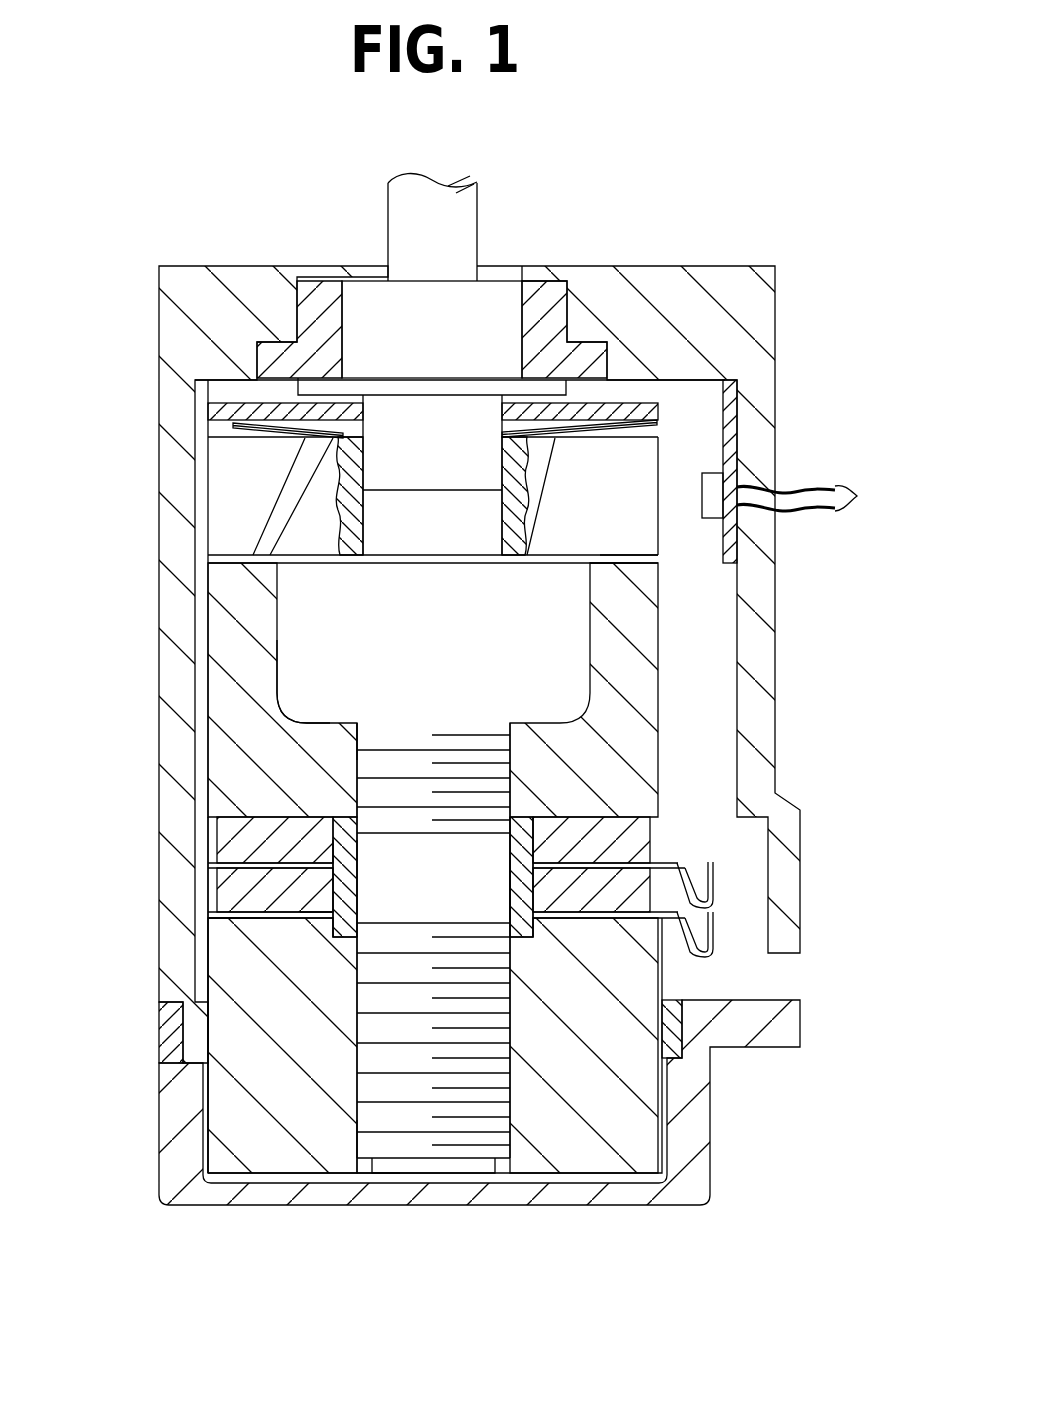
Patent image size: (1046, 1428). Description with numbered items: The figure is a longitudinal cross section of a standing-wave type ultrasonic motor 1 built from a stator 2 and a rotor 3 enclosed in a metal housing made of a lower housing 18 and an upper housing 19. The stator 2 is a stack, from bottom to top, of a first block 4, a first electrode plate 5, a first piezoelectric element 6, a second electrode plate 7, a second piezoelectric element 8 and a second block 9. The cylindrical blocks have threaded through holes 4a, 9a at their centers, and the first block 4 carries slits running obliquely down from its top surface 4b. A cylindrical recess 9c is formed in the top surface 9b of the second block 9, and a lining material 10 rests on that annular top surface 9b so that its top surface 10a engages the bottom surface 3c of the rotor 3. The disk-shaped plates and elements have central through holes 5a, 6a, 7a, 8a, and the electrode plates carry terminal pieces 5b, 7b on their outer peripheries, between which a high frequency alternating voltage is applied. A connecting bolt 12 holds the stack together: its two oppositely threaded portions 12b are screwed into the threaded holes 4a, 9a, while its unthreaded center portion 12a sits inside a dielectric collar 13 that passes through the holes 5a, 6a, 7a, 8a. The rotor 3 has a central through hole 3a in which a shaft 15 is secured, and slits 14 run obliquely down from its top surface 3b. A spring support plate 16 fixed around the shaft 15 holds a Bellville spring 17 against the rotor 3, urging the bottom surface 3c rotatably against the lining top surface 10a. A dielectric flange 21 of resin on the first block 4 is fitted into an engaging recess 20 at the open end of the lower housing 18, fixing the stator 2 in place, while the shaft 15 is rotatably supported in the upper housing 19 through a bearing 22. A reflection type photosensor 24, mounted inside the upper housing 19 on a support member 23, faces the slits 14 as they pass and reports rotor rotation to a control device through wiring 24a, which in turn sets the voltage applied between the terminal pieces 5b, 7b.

The ultrasonic motor 1 is at (764, 206).
The stator 2 is at (86, 748).
The rotor 3 is at (225, 495).
The through hole 3a is at (366, 531).
The top surface 3b is at (656, 437).
The bottom surface 3c is at (315, 560).
The first block 4 is at (212, 966).
The threaded through hole 4a is at (383, 1153).
The top surface 4b is at (257, 945).
The first electrode plate 5 is at (212, 916).
The through hole 5a is at (337, 918).
The terminal piece 5b is at (718, 928).
The first piezoelectric element 6 is at (212, 888).
The through hole 6a is at (517, 862).
The second electrode plate 7 is at (212, 866).
The through hole 7a is at (358, 868).
The terminal piece 7b is at (718, 872).
The second piezoelectric element 8 is at (212, 826).
The through hole 8a is at (526, 842).
The second block 9 is at (212, 784).
The threaded through hole 9a is at (362, 748).
The top surface 9b is at (613, 556).
The cylindrical recess 9c is at (278, 683).
The lining material 10 is at (660, 561).
The top surface 10a is at (627, 553).
The connecting bolt 12 is at (480, 718).
The center portion 12a is at (502, 890).
The threaded portions 12b is at (345, 1095).
The dielectric collar 13 is at (520, 820).
The slits 14 is at (342, 470).
The shaft 15 is at (393, 210).
The spring support plate 16 is at (226, 408).
The Bellville spring 17 is at (236, 427).
The lower housing 18 is at (558, 1197).
The upper housing 19 is at (776, 302).
The engaging recess 20 is at (683, 1052).
The dielectric flange 21 is at (183, 1030).
The bearing 22 is at (545, 290).
The support member 23 is at (734, 550).
The photosensor 24 is at (713, 475).
The wiring 24a is at (857, 496).